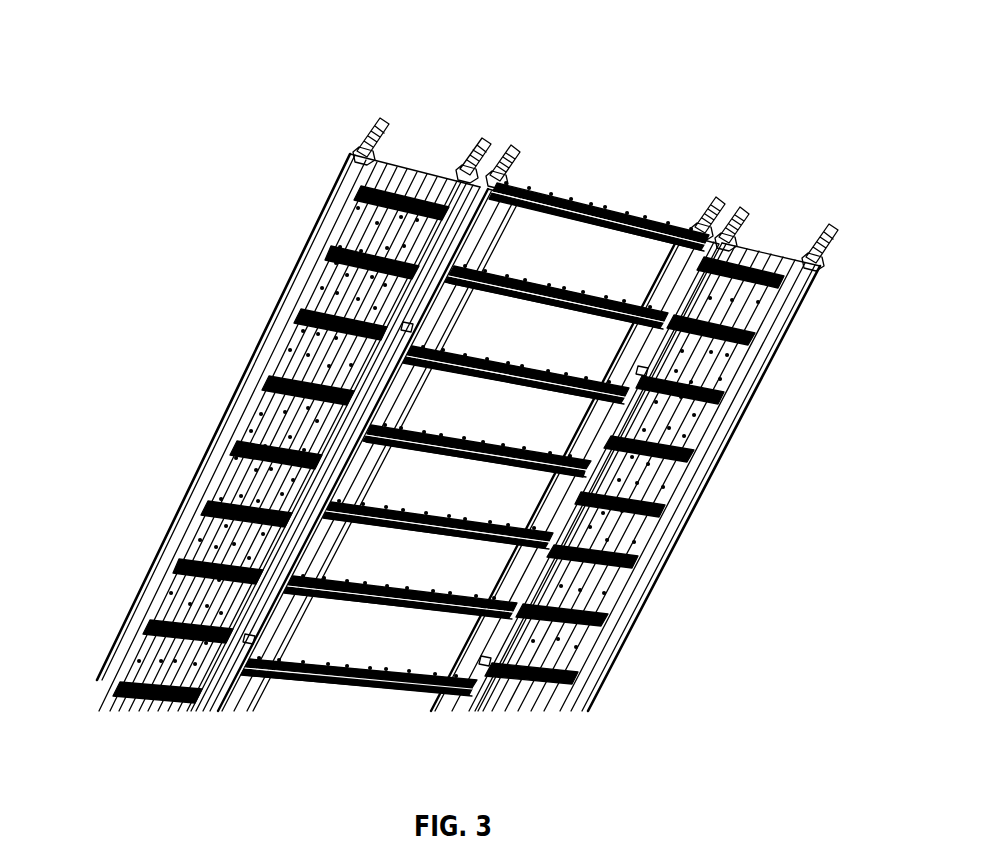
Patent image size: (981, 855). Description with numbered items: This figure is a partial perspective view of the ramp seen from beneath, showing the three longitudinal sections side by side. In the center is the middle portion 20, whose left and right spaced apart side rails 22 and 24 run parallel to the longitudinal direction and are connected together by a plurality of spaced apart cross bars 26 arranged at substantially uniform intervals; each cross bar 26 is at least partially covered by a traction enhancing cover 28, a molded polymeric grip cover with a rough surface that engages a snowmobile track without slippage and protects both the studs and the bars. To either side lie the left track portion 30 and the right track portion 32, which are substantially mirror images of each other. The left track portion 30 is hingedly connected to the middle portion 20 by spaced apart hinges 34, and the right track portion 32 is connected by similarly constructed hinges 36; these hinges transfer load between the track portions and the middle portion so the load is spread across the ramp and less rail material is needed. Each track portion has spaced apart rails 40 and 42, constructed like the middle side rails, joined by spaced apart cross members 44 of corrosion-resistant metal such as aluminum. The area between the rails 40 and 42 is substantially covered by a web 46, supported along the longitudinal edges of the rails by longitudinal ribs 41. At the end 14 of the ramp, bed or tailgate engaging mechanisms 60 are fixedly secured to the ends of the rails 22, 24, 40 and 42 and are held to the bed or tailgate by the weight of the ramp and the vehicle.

The end 14 is at (336, 122).
The middle portion 20 is at (743, 112).
The side rail 22 is at (562, 498).
The side rail 24 is at (210, 700).
The cross bar 26 is at (380, 447).
The traction enhancing cover 28 is at (582, 186).
The left track portion 30 is at (848, 143).
The right track portion 32 is at (507, 59).
The hinge 34 is at (633, 362).
The hinge 36 is at (402, 318).
The rail 40 is at (110, 627).
The longitudinal rib 41 is at (440, 170).
The rail 42 is at (375, 385).
The cross member 44 is at (193, 497).
The web 46 is at (255, 400).
The engaging mechanism 60 is at (360, 126).